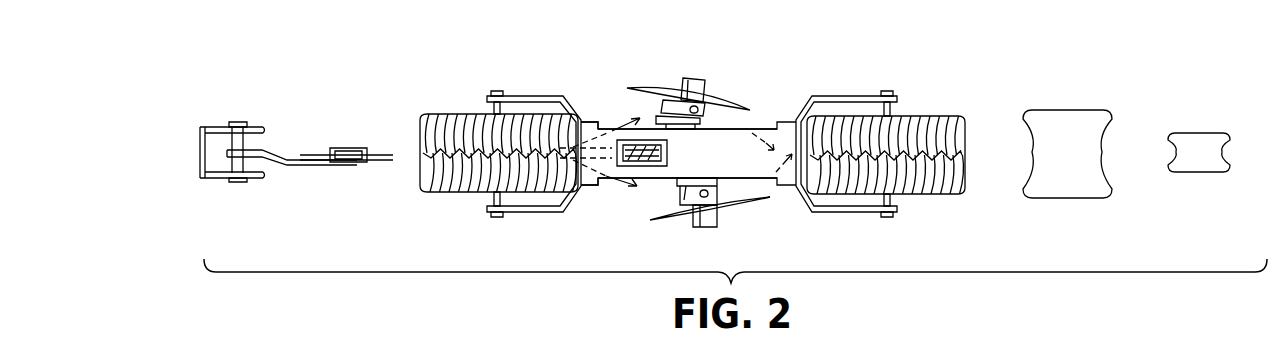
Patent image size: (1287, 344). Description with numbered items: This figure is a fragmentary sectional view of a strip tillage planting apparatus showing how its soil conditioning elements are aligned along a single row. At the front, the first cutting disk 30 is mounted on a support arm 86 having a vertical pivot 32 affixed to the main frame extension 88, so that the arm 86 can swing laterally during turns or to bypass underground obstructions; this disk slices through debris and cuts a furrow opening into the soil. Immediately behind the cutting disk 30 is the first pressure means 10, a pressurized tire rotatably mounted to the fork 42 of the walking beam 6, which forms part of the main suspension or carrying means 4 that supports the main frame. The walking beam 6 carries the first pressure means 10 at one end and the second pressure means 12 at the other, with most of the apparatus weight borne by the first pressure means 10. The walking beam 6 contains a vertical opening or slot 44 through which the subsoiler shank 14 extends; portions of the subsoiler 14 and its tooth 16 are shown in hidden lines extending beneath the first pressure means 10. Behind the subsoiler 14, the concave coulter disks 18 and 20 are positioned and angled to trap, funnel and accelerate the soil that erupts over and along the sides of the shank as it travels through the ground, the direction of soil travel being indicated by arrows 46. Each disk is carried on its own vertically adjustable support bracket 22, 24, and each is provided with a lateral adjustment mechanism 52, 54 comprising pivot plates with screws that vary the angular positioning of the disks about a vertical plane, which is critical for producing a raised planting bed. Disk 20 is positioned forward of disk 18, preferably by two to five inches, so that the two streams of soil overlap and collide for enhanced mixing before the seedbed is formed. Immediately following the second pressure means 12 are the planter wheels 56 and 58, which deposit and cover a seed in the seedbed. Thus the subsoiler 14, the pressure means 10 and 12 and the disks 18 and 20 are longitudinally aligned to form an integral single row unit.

The main suspension or carrying means 4 is at (790, 112).
The walking beam 6 is at (731, 160).
The first pressure means 10 is at (440, 116).
The second pressure means 12 is at (930, 118).
The subsoiler shank 14 is at (588, 183).
The tooth 16 is at (515, 160).
The coulter disk 18 is at (660, 222).
The coulter disk 20 is at (648, 88).
The support bracket 22 is at (717, 227).
The support bracket 24 is at (698, 78).
The first cutting means 30 is at (377, 157).
The vertical pivot 32 is at (240, 182).
The fork 42 is at (530, 98).
The vertical opening or slot 44 is at (670, 157).
The arrows 46 is at (630, 124).
The lateral adjustment mechanism 52 is at (703, 227).
The lateral adjustment mechanism 54 is at (712, 100).
The planter wheel 56 is at (1068, 110).
The planter wheel 58 is at (1197, 133).
The support arm 86 is at (283, 153).
The main frame extension 88 is at (210, 178).